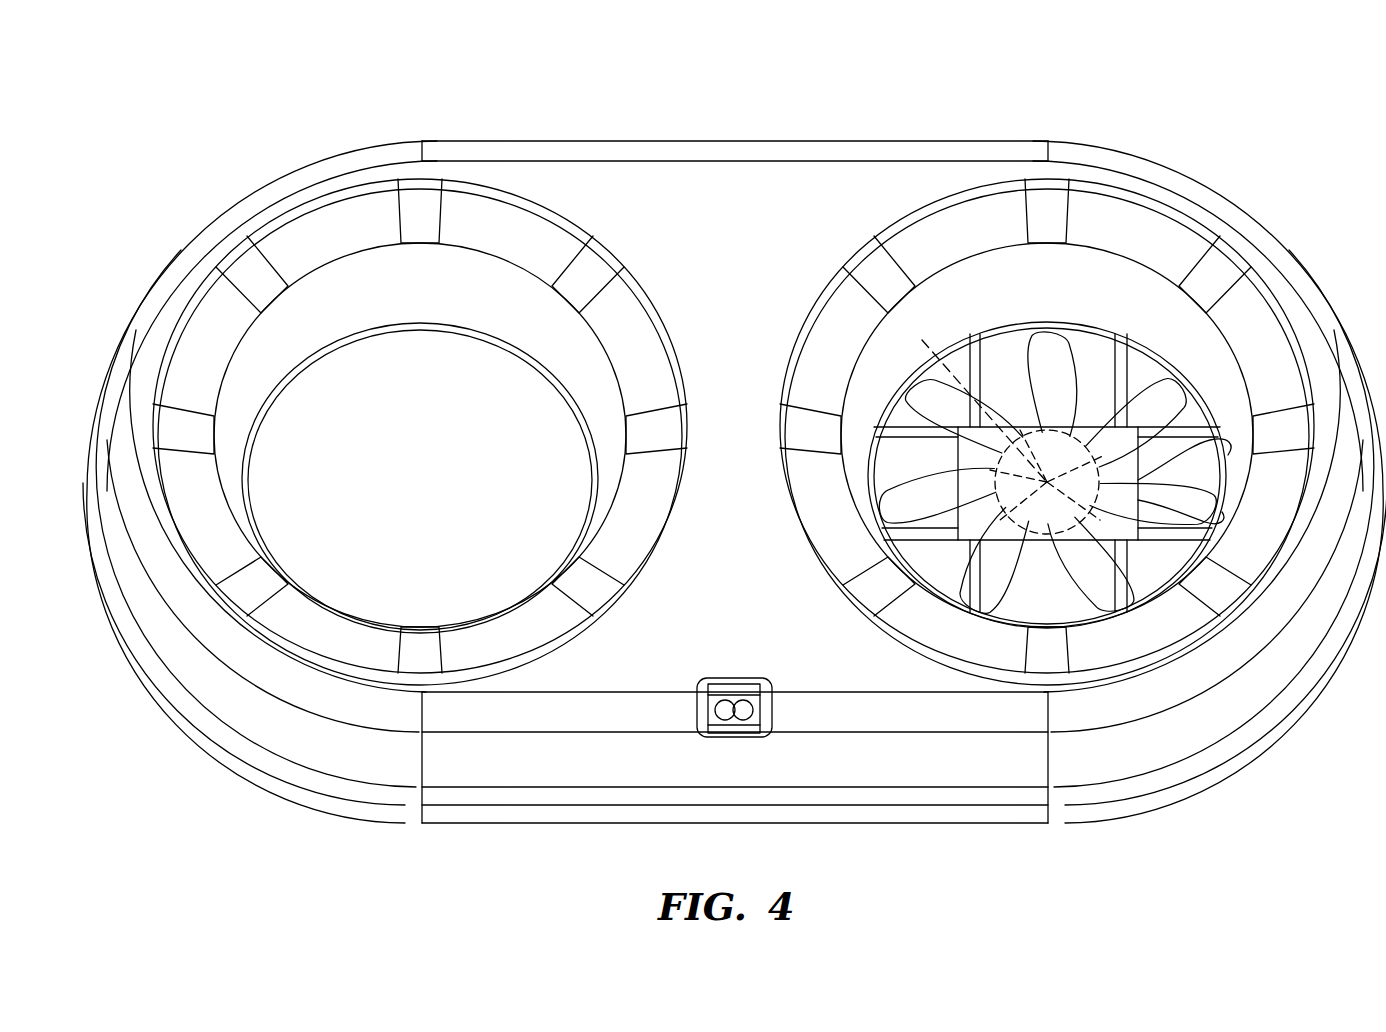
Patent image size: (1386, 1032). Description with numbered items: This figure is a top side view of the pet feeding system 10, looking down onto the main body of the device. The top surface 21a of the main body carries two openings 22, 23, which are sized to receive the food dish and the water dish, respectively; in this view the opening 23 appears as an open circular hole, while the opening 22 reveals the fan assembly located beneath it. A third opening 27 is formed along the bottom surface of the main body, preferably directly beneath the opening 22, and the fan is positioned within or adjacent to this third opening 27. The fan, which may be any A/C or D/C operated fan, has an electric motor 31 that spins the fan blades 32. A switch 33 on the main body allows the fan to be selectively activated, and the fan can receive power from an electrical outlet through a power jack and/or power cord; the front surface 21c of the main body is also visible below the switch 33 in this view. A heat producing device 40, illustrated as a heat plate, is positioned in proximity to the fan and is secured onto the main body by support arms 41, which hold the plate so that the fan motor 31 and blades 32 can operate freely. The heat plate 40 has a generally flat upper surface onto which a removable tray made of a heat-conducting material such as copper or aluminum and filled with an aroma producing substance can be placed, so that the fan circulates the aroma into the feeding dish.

The fan device 10 is at (397, 112).
The top surface 21a is at (762, 268).
The front surface 21c is at (603, 823).
The opening 22 is at (960, 292).
The opening 23 is at (360, 400).
The third opening 27 is at (1047, 444).
The electric motor 31 is at (971, 394).
The fan blades 32 is at (1052, 375).
The switch 33 is at (735, 690).
The heat producing device 40 is at (1118, 440).
The support arms 41 is at (1200, 447).